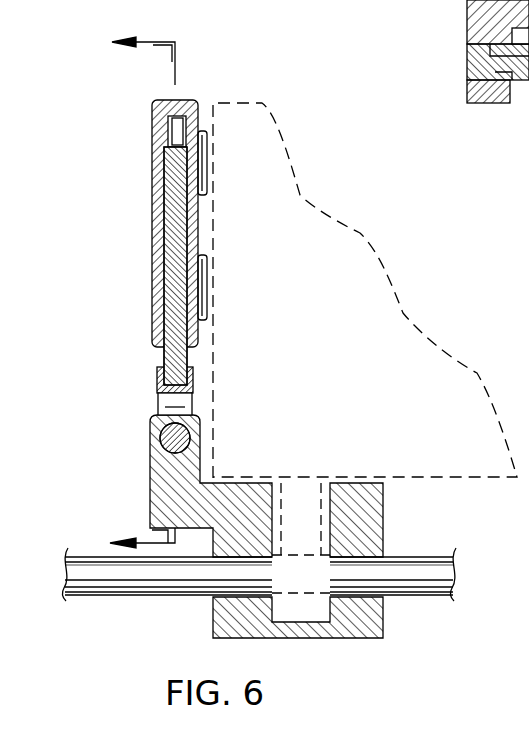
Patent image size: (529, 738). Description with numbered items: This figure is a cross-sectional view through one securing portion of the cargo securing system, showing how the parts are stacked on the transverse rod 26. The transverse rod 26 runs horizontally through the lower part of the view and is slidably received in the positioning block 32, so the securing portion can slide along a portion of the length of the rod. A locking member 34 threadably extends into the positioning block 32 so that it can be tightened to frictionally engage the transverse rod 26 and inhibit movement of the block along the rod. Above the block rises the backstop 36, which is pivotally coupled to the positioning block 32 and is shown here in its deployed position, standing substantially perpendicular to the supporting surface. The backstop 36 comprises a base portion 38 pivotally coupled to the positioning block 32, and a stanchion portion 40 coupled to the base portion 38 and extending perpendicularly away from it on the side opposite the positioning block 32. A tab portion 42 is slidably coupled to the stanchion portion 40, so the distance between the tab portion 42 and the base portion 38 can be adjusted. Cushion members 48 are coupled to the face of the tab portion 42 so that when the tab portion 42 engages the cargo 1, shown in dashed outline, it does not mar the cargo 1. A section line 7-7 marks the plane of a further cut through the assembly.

The cargo 1 is at (268, 120).
The section line 7- 7 is at (134, 293).
The transverse rod 26 is at (413, 582).
The positioning block 32 is at (357, 632).
The locking member 34 is at (325, 517).
The backstop 36 is at (153, 103).
The base portion 38 is at (157, 391).
The stanchion portion 40 is at (158, 352).
The tab portion 42 is at (153, 175).
The cushion members 48 is at (206, 163).